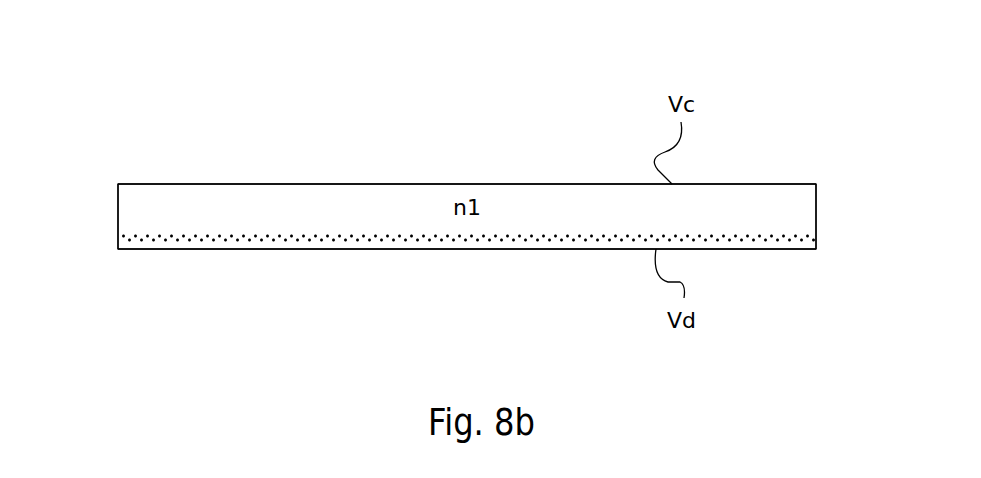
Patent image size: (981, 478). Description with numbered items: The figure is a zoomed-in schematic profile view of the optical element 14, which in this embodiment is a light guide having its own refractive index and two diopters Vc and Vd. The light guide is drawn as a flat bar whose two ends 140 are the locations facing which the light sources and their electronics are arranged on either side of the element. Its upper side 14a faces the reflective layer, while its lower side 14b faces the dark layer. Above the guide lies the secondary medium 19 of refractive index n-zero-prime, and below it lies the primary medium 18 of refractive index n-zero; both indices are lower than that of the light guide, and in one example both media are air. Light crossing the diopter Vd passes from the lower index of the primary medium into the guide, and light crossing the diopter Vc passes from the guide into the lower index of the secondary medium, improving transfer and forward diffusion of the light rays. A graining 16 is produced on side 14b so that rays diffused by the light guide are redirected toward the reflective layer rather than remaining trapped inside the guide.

The optical element 14 is at (752, 178).
The side of the light guide 14a is at (310, 184).
The side of the light guide 14b is at (310, 249).
The end of the optical element 140 is at (118, 193).
The graining 16 is at (817, 230).
The primary medium 18 is at (466, 285).
The secondary medium 19 is at (467, 134).